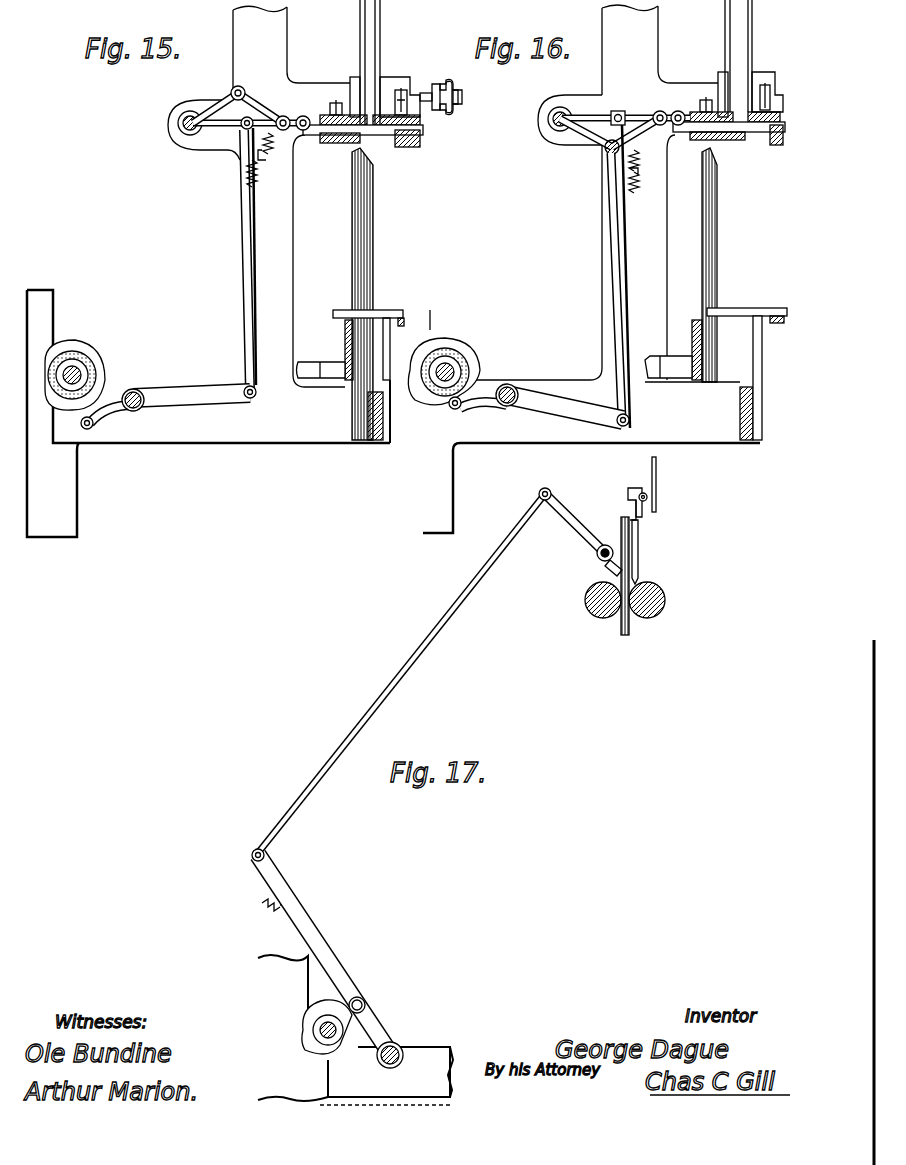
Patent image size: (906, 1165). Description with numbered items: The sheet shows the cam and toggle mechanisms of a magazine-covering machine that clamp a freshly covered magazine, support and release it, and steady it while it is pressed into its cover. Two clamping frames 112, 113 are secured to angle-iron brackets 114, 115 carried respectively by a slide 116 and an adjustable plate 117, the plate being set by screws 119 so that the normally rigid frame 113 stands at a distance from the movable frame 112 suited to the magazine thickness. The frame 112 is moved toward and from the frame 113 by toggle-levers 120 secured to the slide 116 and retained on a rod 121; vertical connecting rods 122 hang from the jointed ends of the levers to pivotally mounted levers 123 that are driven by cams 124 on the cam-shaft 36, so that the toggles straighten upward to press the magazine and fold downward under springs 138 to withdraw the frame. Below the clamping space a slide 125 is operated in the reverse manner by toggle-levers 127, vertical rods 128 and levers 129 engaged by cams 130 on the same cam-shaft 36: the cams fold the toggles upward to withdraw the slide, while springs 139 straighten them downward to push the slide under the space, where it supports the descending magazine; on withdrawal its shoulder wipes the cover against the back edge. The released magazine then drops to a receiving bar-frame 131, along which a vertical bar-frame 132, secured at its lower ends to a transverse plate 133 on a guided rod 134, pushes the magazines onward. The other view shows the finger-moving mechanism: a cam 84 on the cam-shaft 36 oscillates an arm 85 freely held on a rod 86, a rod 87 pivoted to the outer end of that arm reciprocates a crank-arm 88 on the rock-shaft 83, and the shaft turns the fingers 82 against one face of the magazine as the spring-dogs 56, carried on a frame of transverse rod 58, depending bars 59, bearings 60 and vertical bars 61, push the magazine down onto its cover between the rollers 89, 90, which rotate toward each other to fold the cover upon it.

In FIG. 15, the cam-shaft 36 is at (76, 368).
In FIG. 16, the cam-shaft 36 is at (460, 370).
In FIG. 17, the spring-dogs 56 is at (622, 520).
In FIG. 17, the transverse rod 58 is at (645, 510).
In FIG. 17, the depending bars 59 is at (638, 558).
In FIG. 17, the bearings 60 is at (656, 481).
In FIG. 17, the vertical bars 61 is at (658, 509).
In FIG. 17, the fingers 82 is at (609, 568).
In FIG. 17, the rock-shaft 83 is at (596, 556).
In FIG. 17, the cam 84 is at (318, 1012).
In FIG. 17, the arm 85 is at (321, 951).
In FIG. 17, the rod 86 is at (405, 1052).
In FIG. 17, the rod 87 is at (388, 690).
In FIG. 17, the crank-arm 88 is at (586, 531).
In FIG. 17, the roller 89 is at (596, 617).
In FIG. 17, the roller 90 is at (662, 608).
In FIG. 15, the clamping frame 112 is at (360, 46).
In FIG. 16, the clamping frame 112 is at (727, 25).
In FIG. 15, the clamping frame 113 is at (380, 47).
In FIG. 16, the clamping frame 113 is at (750, 27).
In FIG. 15, the angle-iron bracket 114 is at (350, 77).
In FIG. 16, the angle-iron bracket 114 is at (710, 62).
In FIG. 15, the angle-iron bracket 115 is at (387, 80).
In FIG. 16, the angle-iron bracket 115 is at (757, 80).
In FIG. 15, the slide 116 is at (323, 117).
In FIG. 16, the slide 116 is at (719, 104).
In FIG. 15, the adjustable plate 117 is at (423, 124).
In FIG. 16, the adjustable plate 117 is at (787, 118).
In FIG. 15, the screws 119 is at (458, 96).
In FIG. 16, the screws 119 is at (462, 88).
In FIG. 15, the toggle-levers 120 is at (244, 128).
In FIG. 16, the toggle-levers 120 is at (632, 106).
In FIG. 15, the rod 121 is at (178, 126).
In FIG. 16, the rod 121 is at (550, 126).
In FIG. 15, the connecting rods 122 is at (255, 212).
In FIG. 16, the connecting rods 122 is at (613, 173).
In FIG. 15, the levers 123 is at (244, 402).
In FIG. 16, the levers 123 is at (613, 430).
In FIG. 15, the cams 124 is at (105, 363).
In FIG. 16, the cams 124 is at (472, 353).
In FIG. 15, the slide 125 is at (360, 135).
In FIG. 16, the slide 125 is at (747, 130).
In FIG. 15, the toggle-levers 127 is at (240, 88).
In FIG. 16, the toggle-levers 127 is at (655, 110).
In FIG. 15, the vertical rods 128 is at (242, 210).
In FIG. 16, the vertical rods 128 is at (620, 222).
In FIG. 15, the levers 129 is at (203, 399).
In FIG. 16, the levers 129 is at (553, 407).
In FIG. 15, the cams 130 is at (112, 377).
In FIG. 16, the cams 130 is at (462, 335).
In FIG. 15, the receiving bar-frame 131 is at (390, 311).
In FIG. 16, the receiving bar-frame 131 is at (768, 302).
In FIG. 15, the vertical bar-frame 132 is at (373, 253).
In FIG. 16, the vertical bar-frame 132 is at (720, 267).
In FIG. 15, the transverse plate 133 is at (330, 350).
In FIG. 16, the transverse plate 133 is at (690, 326).
In FIG. 15, the rod 134 is at (313, 379).
In FIG. 16, the rod 134 is at (660, 378).
In FIG. 15, the springs 138 is at (273, 150).
In FIG. 15, the springs 139 is at (258, 182).
In FIG. 16, the springs 139 is at (640, 193).